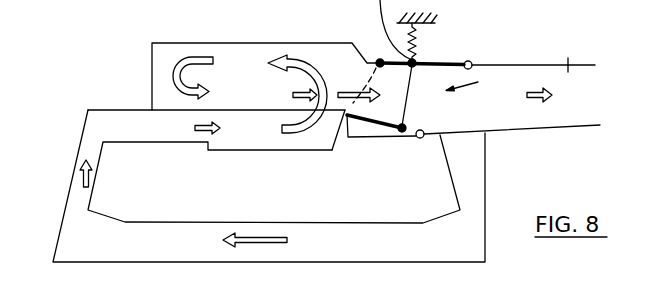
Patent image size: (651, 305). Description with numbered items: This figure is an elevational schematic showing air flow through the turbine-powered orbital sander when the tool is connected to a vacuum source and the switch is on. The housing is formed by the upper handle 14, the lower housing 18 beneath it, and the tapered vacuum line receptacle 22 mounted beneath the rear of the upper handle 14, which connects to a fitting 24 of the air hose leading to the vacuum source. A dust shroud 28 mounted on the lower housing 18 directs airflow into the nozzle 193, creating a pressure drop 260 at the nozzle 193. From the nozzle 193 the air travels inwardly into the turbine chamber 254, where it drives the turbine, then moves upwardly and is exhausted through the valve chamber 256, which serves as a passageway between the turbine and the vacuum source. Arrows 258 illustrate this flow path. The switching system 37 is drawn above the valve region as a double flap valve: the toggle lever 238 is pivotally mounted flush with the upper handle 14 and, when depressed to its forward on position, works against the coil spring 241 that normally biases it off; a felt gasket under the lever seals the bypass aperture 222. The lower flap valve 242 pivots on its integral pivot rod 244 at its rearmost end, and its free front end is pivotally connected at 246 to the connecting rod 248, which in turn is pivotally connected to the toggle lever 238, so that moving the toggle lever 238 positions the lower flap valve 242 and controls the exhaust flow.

The upper handle 14 is at (205, 42).
The lower housing 18 is at (147, 202).
The vacuum line receptacle 22 is at (533, 63).
The fitting 24 is at (585, 63).
The dust shroud 28 is at (62, 217).
The switching system 37 is at (499, 88).
The nozzle 193 is at (120, 118).
The bypass aperture 222 is at (373, 57).
The toggle lever 238 is at (437, 63).
The coil spring 241 is at (415, 43).
The lower flap valve 242 is at (373, 125).
The pivot rod 244 is at (421, 139).
The pivotal connection 246 is at (397, 134).
The connecting rod 248 is at (407, 110).
The turbine chamber 254 is at (257, 57).
The valve chamber 256 is at (495, 107).
The arrows 258 is at (248, 243).
The pressure drop 260 is at (133, 118).